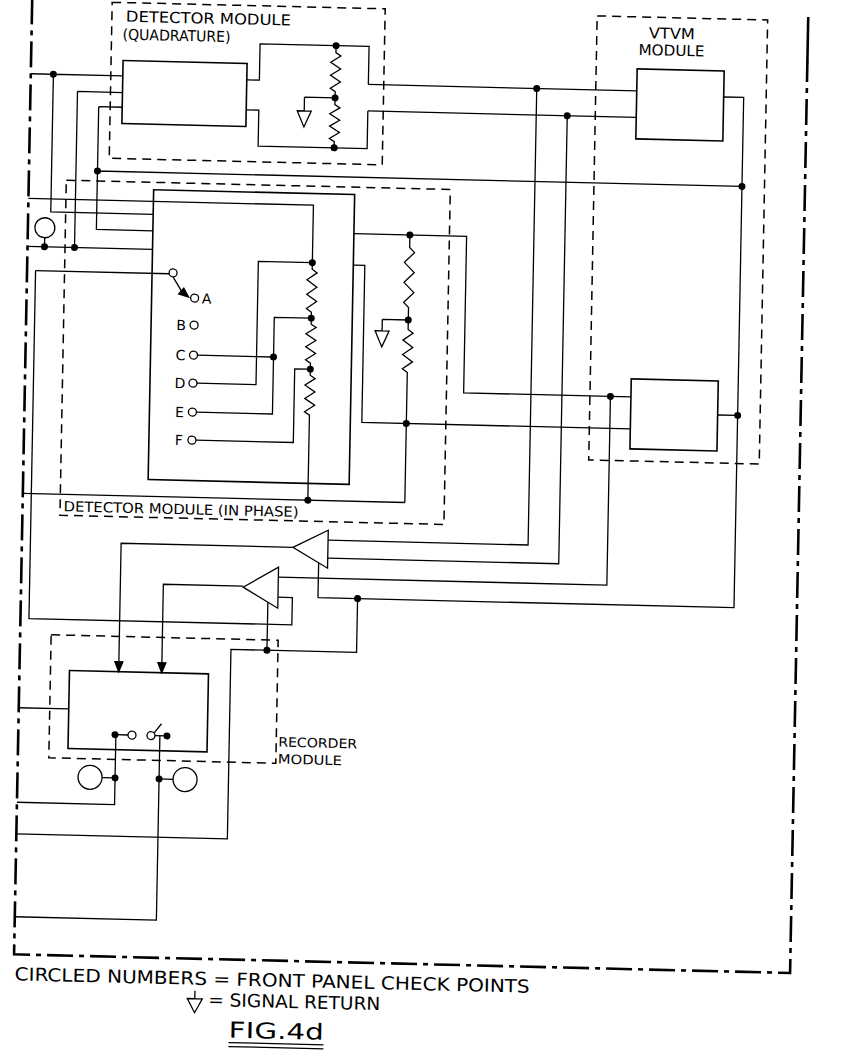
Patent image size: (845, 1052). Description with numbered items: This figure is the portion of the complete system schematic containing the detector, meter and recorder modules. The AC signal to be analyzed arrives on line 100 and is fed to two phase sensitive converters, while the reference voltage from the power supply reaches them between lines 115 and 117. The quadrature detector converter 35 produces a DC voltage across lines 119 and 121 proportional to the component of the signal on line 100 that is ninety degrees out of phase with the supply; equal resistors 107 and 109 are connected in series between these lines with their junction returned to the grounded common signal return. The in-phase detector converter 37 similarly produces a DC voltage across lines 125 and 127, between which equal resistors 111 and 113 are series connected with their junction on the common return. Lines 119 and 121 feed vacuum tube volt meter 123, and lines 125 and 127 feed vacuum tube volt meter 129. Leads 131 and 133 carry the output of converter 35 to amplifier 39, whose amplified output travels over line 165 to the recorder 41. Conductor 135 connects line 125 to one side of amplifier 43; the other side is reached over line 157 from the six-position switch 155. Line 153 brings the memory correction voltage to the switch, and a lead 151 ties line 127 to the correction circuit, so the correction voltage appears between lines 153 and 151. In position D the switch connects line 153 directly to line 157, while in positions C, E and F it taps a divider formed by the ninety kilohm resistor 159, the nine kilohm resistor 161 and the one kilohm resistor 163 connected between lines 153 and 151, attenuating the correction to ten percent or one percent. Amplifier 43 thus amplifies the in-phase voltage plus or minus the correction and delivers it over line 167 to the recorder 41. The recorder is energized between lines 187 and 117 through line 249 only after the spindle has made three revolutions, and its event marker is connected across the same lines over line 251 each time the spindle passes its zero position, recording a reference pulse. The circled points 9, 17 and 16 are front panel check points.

The line 100 is at (76, 75).
The phase sensitive converter 35 is at (229, 60).
The resistor 107 is at (331, 71).
The resistor 109 is at (332, 125).
The line 119 is at (435, 78).
The line 121 is at (436, 105).
The lead 131 is at (535, 156).
The lead 133 is at (562, 124).
The vacuum tube volt meter 123 is at (663, 126).
The vacuum tube volt meter 129 is at (678, 366).
The line 117 is at (649, 172).
The front panel check point 9 is at (45, 232).
The phase sensitive converter 37 is at (154, 427).
The line 153 is at (314, 230).
The ninety kilohm resistor 159 is at (316, 296).
The nine kilohm resistor 161 is at (316, 347).
The one kilohm resistor 163 is at (316, 409).
The switch 155 is at (187, 291).
The line 115 is at (120, 272).
The line 157 is at (38, 368).
The lead 151 is at (103, 494).
The resistor 111 is at (411, 282).
The resistor 113 is at (409, 350).
The line 125 is at (522, 384).
The line 127 is at (480, 416).
The conductor 135 is at (615, 532).
The amplifier 39 is at (296, 542).
The line 165 is at (207, 542).
The amplifier 43 is at (259, 596).
The line 167 is at (231, 582).
The recorder 41 is at (97, 671).
The line 187 is at (44, 712).
The motor 17 is at (96, 777).
The front panel check point 16 is at (178, 779).
The line 251 is at (77, 804).
The line 249 is at (82, 918).